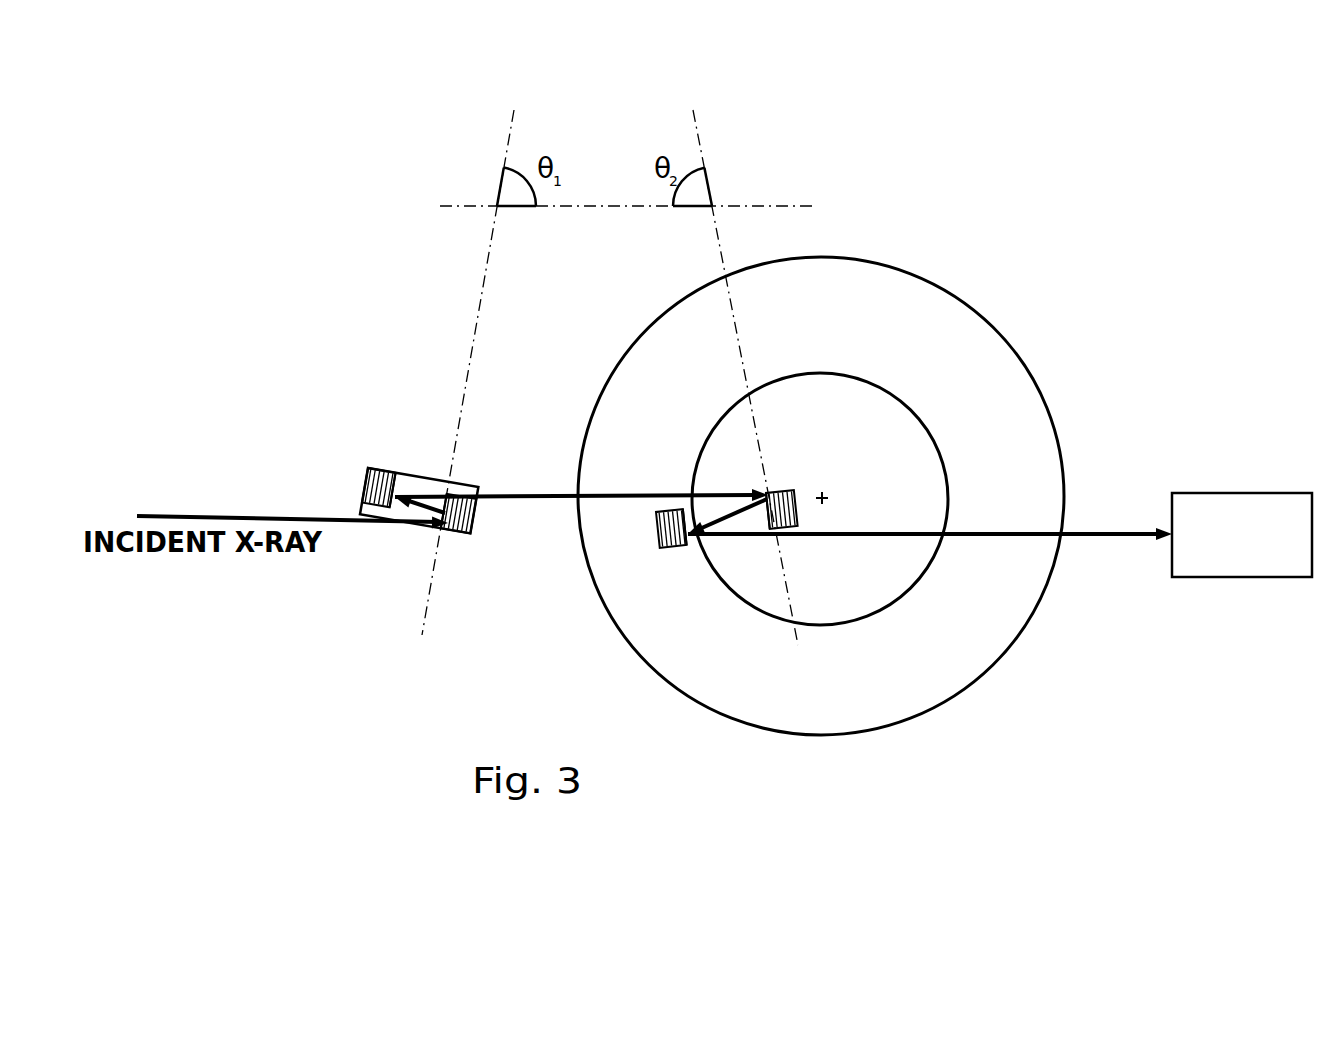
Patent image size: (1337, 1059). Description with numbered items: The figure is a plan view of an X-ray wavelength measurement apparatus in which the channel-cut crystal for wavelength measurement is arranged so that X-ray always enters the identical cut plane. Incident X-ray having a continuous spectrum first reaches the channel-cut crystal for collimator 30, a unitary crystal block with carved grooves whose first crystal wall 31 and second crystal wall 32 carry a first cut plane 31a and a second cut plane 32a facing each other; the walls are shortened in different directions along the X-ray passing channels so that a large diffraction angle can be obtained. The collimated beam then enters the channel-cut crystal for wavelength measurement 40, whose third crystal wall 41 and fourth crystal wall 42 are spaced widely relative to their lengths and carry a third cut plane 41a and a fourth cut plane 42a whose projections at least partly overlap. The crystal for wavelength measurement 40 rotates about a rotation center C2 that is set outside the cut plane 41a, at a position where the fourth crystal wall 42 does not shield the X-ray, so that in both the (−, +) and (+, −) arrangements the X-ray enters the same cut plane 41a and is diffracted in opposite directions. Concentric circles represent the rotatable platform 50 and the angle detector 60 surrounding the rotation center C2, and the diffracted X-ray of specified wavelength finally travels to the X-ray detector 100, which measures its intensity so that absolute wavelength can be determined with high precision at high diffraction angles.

The channel-cut crystal for collimator 30 is at (419, 464).
The first crystal wall 31 is at (459, 514).
The first cut plane 31a is at (444, 511).
The second crystal wall 32 is at (379, 487).
The second cut plane 32a is at (393, 490).
The channel-cut crystal for wavelength measurement 40 is at (727, 486).
The third crystal wall 41 is at (782, 509).
The third cut plane 41a is at (768, 511).
The fourth crystal wall 42 is at (671, 528).
The fourth cut plane 42a is at (685, 527).
The rotatable platform 50 is at (930, 420).
The angle detector 60 is at (1000, 332).
The rotation center C2 is at (832, 492).
The X-ray detector 100 is at (1233, 493).